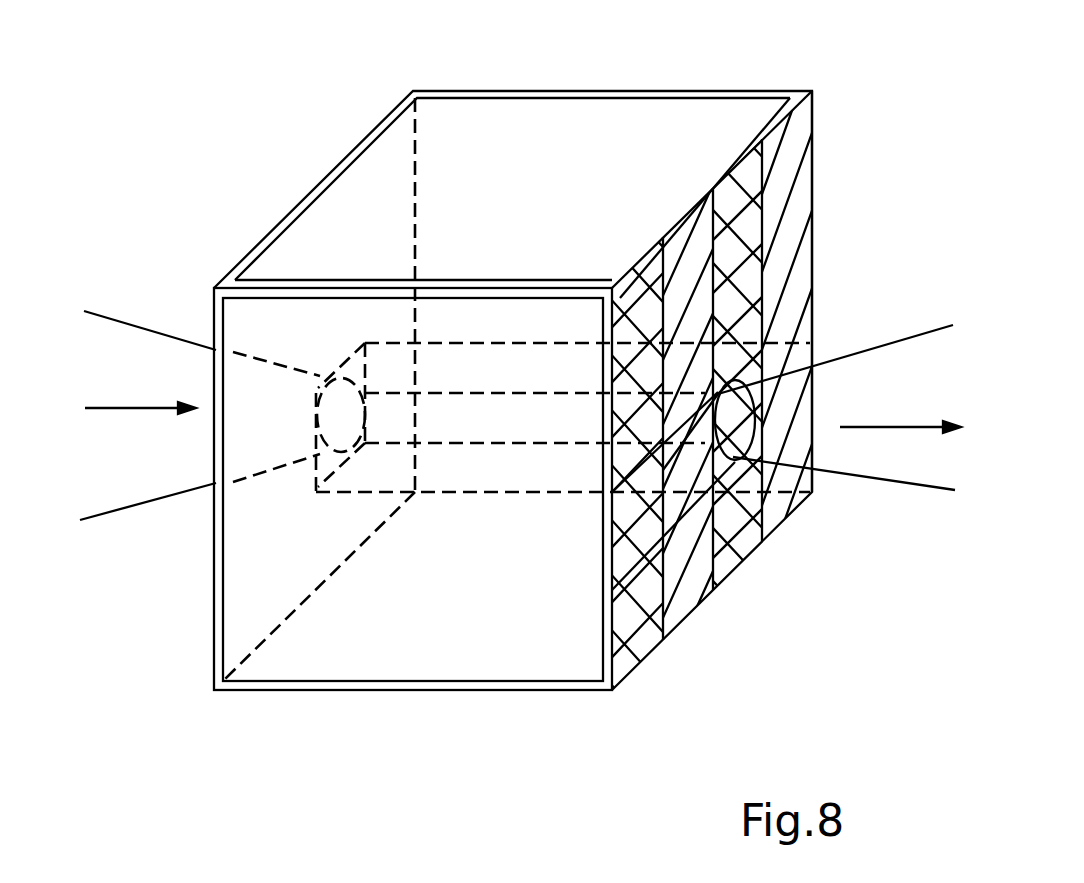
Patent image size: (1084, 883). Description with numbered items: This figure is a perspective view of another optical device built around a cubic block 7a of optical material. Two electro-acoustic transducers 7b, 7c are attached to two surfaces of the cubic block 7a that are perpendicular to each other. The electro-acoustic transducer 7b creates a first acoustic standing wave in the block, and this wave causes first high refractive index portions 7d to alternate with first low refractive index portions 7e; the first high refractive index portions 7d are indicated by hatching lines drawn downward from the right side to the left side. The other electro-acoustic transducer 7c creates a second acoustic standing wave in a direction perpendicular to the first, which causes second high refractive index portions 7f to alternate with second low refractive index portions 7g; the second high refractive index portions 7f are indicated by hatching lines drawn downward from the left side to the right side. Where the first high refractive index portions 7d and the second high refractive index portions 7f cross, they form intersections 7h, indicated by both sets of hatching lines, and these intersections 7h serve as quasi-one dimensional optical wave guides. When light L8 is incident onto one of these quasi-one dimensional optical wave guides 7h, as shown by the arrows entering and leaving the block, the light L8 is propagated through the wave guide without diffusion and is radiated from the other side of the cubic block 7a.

The cubic block 7a is at (818, 226).
The electro-acoustic transducer 7b is at (653, 142).
The electro-acoustic transducer 7c is at (503, 602).
The first high refractive index portions 7d is at (805, 148).
The first low refractive index portions 7e is at (808, 498).
The second high refractive index portions 7f is at (643, 633).
The second low refractive index portions 7g is at (685, 583).
The intersections 7h is at (625, 290).
The light L8 is at (112, 408).